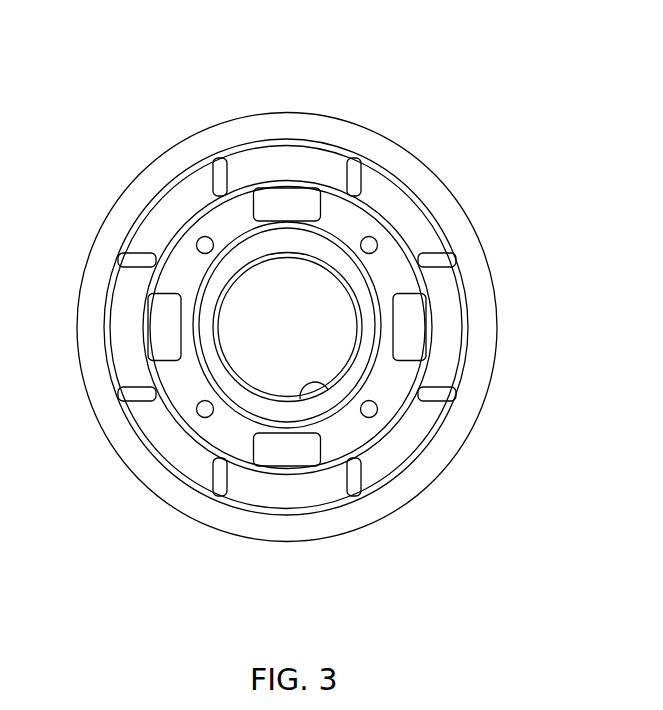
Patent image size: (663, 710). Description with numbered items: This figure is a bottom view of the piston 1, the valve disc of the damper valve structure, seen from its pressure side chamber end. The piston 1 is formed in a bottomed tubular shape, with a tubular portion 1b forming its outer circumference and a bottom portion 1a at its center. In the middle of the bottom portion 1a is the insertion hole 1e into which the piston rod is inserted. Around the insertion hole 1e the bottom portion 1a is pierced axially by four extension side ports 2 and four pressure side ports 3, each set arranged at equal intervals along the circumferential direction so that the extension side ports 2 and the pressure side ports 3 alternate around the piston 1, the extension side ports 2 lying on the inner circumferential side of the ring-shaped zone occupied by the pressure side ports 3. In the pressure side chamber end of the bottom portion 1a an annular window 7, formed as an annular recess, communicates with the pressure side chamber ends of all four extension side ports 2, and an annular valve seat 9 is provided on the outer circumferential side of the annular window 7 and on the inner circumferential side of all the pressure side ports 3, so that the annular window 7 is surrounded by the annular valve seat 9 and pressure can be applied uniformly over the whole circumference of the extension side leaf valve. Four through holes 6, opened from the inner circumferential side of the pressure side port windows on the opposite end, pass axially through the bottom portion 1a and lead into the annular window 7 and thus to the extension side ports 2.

The piston 1 is at (387, 128).
The bottom portion 1a is at (257, 153).
The tubular portion 1b is at (420, 165).
The insertion hole 1e is at (330, 391).
The extension side ports 2 is at (290, 197).
The pressure side ports 3 is at (167, 203).
The through holes 6 is at (196, 246).
The annular window 7 is at (167, 281).
The annular valve seat 9 is at (170, 412).